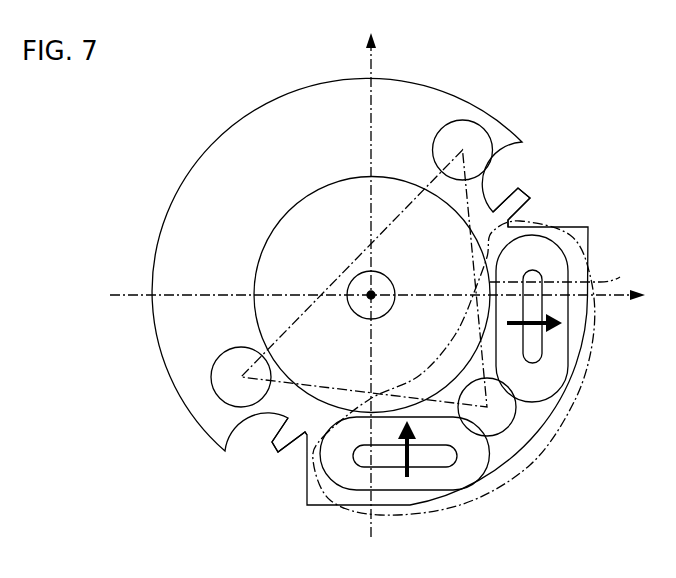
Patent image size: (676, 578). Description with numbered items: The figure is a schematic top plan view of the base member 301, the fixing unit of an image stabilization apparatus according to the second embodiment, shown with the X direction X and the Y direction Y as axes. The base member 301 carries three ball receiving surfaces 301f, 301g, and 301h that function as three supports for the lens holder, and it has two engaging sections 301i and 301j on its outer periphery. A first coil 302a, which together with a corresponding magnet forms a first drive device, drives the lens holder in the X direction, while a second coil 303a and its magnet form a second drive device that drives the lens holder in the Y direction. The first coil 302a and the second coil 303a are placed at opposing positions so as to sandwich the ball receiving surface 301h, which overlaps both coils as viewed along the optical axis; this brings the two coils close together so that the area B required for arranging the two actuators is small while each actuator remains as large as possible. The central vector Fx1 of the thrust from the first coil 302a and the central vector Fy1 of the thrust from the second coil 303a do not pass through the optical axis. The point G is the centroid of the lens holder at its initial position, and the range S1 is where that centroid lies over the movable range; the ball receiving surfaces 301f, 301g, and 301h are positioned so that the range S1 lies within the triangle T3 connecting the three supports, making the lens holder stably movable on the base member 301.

The base member 301 is at (324, 84).
The ball receiving surface 301f is at (473, 125).
The ball receiving surface 301g is at (212, 380).
The ball receiving surface 301h is at (516, 405).
The engaging section 301i is at (532, 193).
The engaging section 301j is at (274, 444).
The first coil 302a is at (557, 265).
The second coil 303a is at (339, 484).
The centroid position G is at (378, 292).
The range of centroid position S1 is at (388, 313).
The triangle T3 is at (568, 277).
The area B is at (530, 463).
The central vector of thrust force Fx1 is at (557, 322).
The central vector of thrust force Fy1 is at (422, 449).
The X direction X is at (386, 298).
The Y direction Y is at (369, 274).